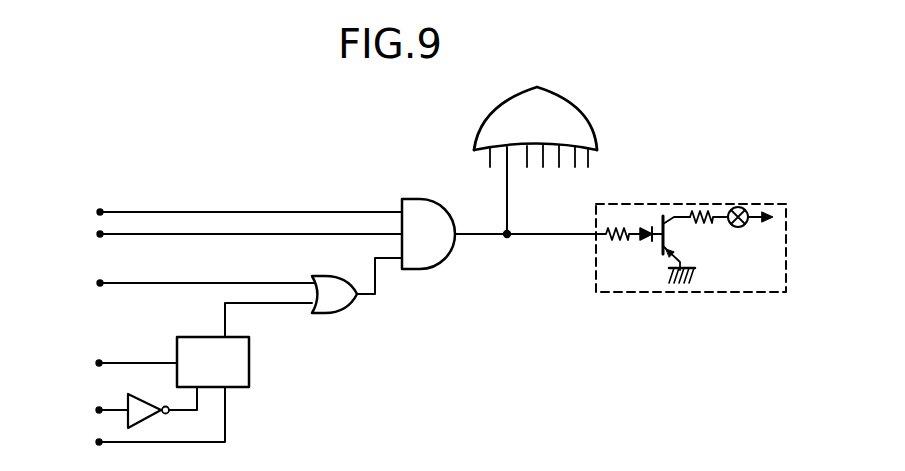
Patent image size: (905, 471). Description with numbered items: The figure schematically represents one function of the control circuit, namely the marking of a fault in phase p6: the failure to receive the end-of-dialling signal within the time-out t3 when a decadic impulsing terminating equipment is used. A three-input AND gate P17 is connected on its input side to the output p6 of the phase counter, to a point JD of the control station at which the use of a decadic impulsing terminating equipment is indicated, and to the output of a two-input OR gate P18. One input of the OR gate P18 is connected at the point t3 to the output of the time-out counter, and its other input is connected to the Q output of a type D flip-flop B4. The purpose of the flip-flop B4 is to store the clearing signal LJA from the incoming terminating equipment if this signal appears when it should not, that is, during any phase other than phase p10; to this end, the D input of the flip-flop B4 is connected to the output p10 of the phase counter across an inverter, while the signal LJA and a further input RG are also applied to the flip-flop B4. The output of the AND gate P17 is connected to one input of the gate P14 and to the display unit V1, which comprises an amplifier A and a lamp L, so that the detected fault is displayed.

The gate P14 is at (565, 112).
The three-input AND gate P17 is at (425, 206).
The two-input OR gate P18 is at (334, 301).
The type D flip-flop B4 is at (249, 363).
The amplifier A is at (652, 205).
The lamp L is at (733, 208).
The display unit V1 is at (691, 252).
The output p6 of phase counter p6 is at (228, 215).
The point JD of the control station JD is at (227, 236).
The time-out t3 point t3 is at (184, 286).
The input signal RG is at (114, 365).
The output p10 of phase counter p10 is at (124, 407).
The clearing signal from the incoming terminating equipment LJA is at (138, 421).